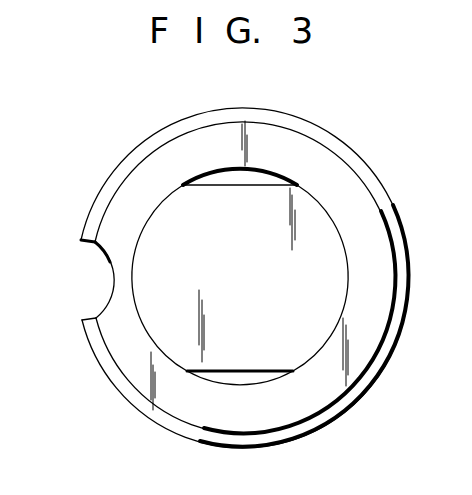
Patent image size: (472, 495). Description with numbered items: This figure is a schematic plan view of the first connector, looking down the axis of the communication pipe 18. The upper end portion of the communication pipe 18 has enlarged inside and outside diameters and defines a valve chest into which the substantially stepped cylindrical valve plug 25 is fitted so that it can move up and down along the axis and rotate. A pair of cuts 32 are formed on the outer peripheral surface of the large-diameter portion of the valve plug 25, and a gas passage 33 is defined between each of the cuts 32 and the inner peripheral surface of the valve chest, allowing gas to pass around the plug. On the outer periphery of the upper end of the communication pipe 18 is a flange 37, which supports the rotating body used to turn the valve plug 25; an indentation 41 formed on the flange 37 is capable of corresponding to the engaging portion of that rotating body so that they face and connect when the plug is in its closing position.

The communication pipe 18 is at (334, 170).
The valve plug 25 is at (325, 239).
The cuts 32 is at (247, 183).
The gas passage 33 is at (211, 180).
The flange 37 is at (96, 201).
The indentation 41 is at (106, 258).